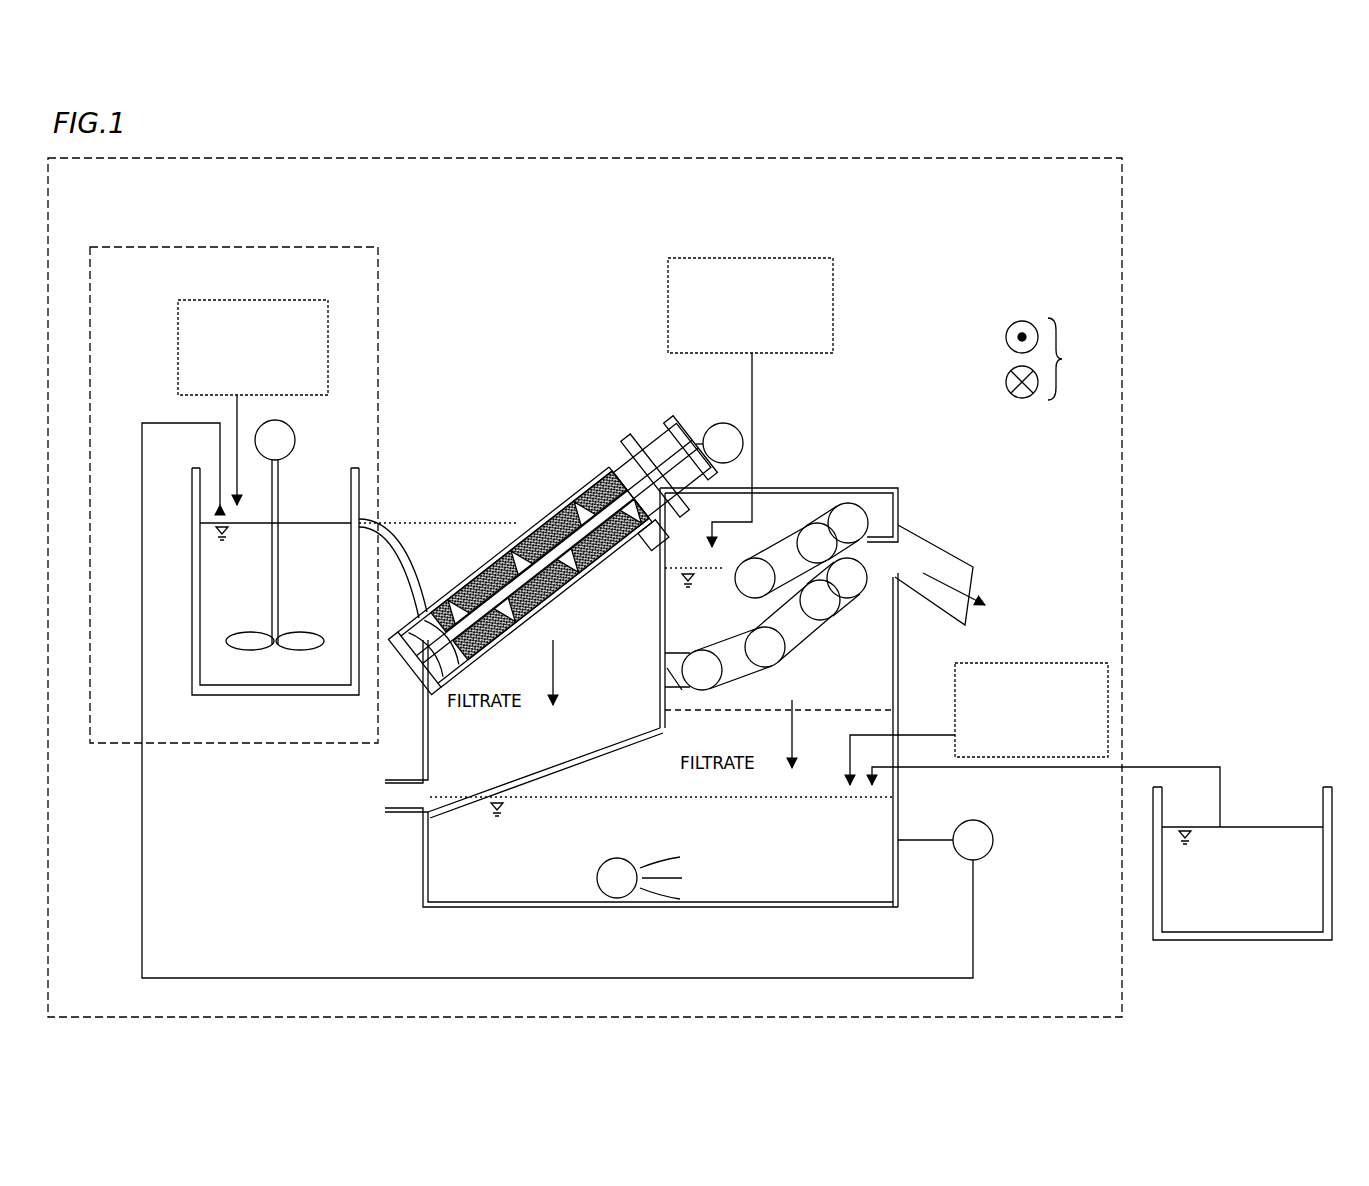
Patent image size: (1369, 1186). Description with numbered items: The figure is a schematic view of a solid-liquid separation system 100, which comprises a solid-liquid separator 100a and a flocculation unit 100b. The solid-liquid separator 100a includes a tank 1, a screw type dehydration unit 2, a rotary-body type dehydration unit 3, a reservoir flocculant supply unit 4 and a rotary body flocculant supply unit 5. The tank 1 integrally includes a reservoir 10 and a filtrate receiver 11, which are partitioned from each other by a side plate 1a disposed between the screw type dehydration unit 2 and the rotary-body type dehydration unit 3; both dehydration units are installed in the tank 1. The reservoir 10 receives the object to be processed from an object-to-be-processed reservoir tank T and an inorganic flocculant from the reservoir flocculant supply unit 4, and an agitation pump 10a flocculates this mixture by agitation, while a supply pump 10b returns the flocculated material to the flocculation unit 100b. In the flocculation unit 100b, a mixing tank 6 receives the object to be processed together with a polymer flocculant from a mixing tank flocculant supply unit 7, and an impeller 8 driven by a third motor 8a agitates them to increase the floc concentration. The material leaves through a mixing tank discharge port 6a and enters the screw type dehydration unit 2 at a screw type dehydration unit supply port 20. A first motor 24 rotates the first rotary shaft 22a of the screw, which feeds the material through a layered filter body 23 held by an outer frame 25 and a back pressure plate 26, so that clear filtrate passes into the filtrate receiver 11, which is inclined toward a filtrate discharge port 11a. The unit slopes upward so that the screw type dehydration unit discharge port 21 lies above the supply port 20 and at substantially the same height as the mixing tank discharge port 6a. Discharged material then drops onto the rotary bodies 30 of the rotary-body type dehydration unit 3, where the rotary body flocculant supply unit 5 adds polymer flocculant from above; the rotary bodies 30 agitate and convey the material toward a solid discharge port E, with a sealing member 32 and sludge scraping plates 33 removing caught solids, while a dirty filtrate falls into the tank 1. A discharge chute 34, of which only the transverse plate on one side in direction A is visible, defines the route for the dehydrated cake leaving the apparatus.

The solid-liquid separation system 100 is at (203, 157).
The solid-liquid separator 100a is at (588, 260).
The flocculation unit 100b is at (128, 247).
The tank 1 is at (716, 918).
The side plate 1a is at (660, 645).
The screw type dehydration unit 2 is at (561, 543).
The rotary-body type dehydration unit 3 is at (807, 503).
The reservoir flocculant supply unit 4 is at (1090, 663).
The rotary body flocculant supply unit 5 is at (790, 257).
The mixing tank 6 is at (192, 640).
The mixing tank discharge port 6a is at (362, 519).
The mixing tank flocculant supply unit 7 is at (268, 300).
The impeller 8 is at (310, 636).
The third motor 8a is at (293, 432).
The reservoir 10 is at (497, 902).
The agitation pump 10a is at (633, 860).
The supply pump 10b is at (988, 825).
The filtrate receiver 11 is at (477, 795).
The filtrate discharge port 11a is at (388, 810).
The screw type dehydration unit supply port 20 is at (520, 581).
The screw type dehydration unit discharge port 21 is at (653, 535).
The first rotary shaft 22a is at (557, 551).
The layered filter body 23 is at (540, 565).
The first motor 24 is at (690, 440).
The outer frame 25 is at (673, 461).
The back pressure plate 26 is at (662, 469).
The rotary bodies 30 is at (850, 503).
The sealing member 32 is at (665, 683).
The sludge scraping plates 33 is at (868, 537).
The discharge chute 34 is at (955, 565).
The solid discharge port E is at (900, 575).
The direction A is at (1043, 359).
The object-to-be-processed reservoir tank T is at (1332, 848).